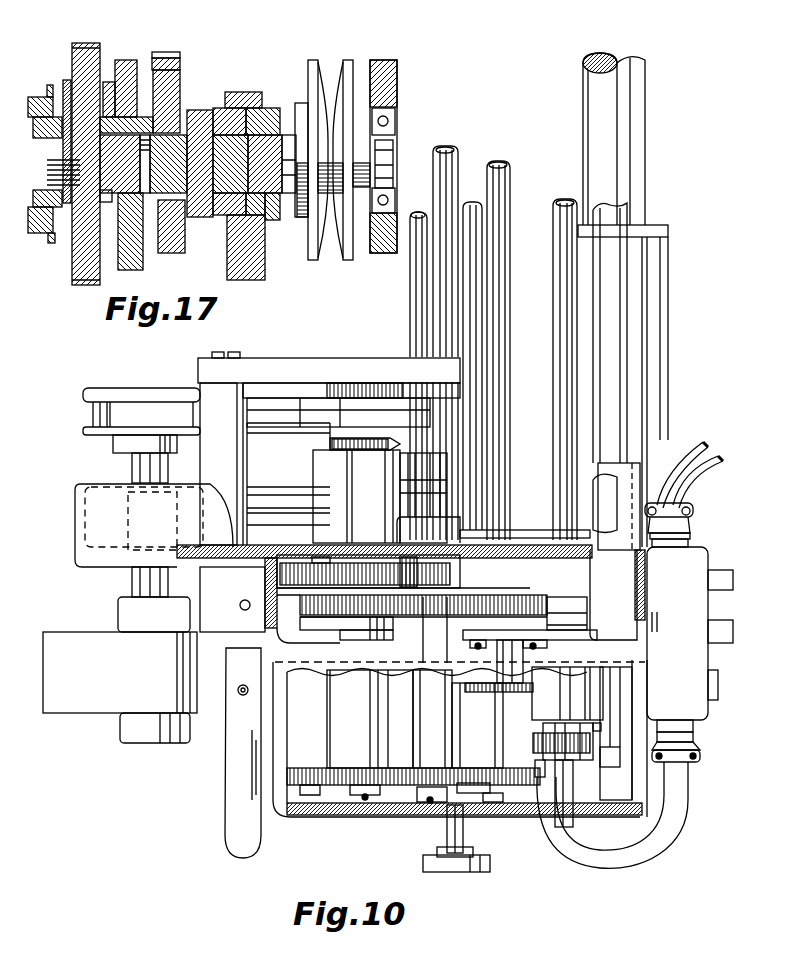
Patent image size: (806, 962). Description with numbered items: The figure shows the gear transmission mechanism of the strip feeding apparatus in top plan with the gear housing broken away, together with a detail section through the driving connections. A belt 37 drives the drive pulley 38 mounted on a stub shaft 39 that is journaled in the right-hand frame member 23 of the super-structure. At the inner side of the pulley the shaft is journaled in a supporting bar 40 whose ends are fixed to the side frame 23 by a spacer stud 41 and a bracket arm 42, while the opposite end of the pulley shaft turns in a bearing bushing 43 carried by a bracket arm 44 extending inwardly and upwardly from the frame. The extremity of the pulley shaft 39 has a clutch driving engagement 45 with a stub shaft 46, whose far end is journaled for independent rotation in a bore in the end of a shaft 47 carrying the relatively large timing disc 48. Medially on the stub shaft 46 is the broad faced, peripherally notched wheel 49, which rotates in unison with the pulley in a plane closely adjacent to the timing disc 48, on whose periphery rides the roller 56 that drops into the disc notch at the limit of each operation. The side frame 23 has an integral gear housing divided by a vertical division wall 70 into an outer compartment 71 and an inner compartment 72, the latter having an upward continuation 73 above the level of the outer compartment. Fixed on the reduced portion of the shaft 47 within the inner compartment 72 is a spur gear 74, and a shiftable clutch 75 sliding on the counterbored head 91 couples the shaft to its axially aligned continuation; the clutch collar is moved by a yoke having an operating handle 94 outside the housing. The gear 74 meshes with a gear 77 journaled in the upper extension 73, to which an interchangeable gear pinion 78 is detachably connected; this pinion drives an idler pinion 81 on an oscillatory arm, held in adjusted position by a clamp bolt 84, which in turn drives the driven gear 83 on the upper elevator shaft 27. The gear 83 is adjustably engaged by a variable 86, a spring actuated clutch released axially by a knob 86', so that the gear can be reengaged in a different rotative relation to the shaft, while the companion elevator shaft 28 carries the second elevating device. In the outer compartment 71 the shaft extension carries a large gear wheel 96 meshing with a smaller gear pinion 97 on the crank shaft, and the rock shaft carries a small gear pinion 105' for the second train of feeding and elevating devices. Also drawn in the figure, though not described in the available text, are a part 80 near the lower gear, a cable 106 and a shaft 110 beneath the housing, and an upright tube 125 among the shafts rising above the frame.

In FIG. 10, the right-hand frame member 23 is at (93, 512).
In FIG. 10, the upper elevator shaft 27 is at (504, 164).
In FIG. 10, the transverse rotary shaft 28 is at (449, 150).
In FIG. 10, the belt 37 is at (258, 422).
In FIG. 17, the drive pulley 38 is at (346, 262).
In FIG. 10, the drive pulley 38 is at (316, 388).
In FIG. 17, the stub shaft 39 is at (386, 158).
In FIG. 10, the stub shaft 39 is at (362, 382).
In FIG. 17, the supporting bar 40 is at (396, 96).
In FIG. 10, the supporting bar 40 is at (287, 352).
In FIG. 10, the spacer stud 41 is at (447, 397).
In FIG. 10, the bracket arm 42 is at (208, 397).
In FIG. 17, the bearing bushing 43 is at (267, 108).
In FIG. 10, the bearing bushing 43 is at (330, 447).
In FIG. 17, the bracket arm 44 is at (240, 92).
In FIG. 10, the bracket arm 44 is at (455, 513).
In FIG. 17, the clutch driving engagement 45 is at (273, 221).
In FIG. 17, the stub shaft 46 is at (226, 215).
In FIG. 17, the shaft 47 is at (123, 195).
In FIG. 10, the shaft 47 is at (367, 787).
In FIG. 17, the timing disc 48 is at (174, 92).
In FIG. 17, the peripherally notched wheel 49 is at (188, 120).
In FIG. 17, the roller 56 is at (152, 58).
In FIG. 10, the division wall 70 is at (293, 533).
In FIG. 10, the outer compartment 71 is at (460, 738).
In FIG. 10, the inner compartment 72 is at (505, 588).
In FIG. 10, the upward continuation 73 is at (690, 545).
In FIG. 17, the spur gear 74 is at (84, 284).
In FIG. 17, the shiftable clutch 75 is at (43, 228).
In FIG. 10, the gear 77 is at (448, 574).
In FIG. 10, the gear pinion 78 is at (488, 596).
In FIG. 10, the plate 80 is at (318, 618).
In FIG. 10, the idler pinion 81 is at (435, 622).
In FIG. 10, the driven gear 83 is at (575, 593).
In FIG. 10, the clamp bolt 84 is at (508, 597).
In FIG. 10, the variable 86 is at (510, 630).
In FIG. 10, the knob 86' is at (492, 704).
In FIG. 10, the counterbored head 91 is at (363, 633).
In FIG. 10, the operating handle 94 is at (238, 822).
In FIG. 10, the large gear wheel 96 is at (313, 787).
In FIG. 10, the gear pinion 97 is at (433, 784).
In FIG. 10, the small gear pinion 105' is at (531, 834).
In FIG. 10, the cable 106 is at (598, 731).
In FIG. 10, the shaft 110 is at (575, 828).
In FIG. 10, the tube 125 is at (553, 212).